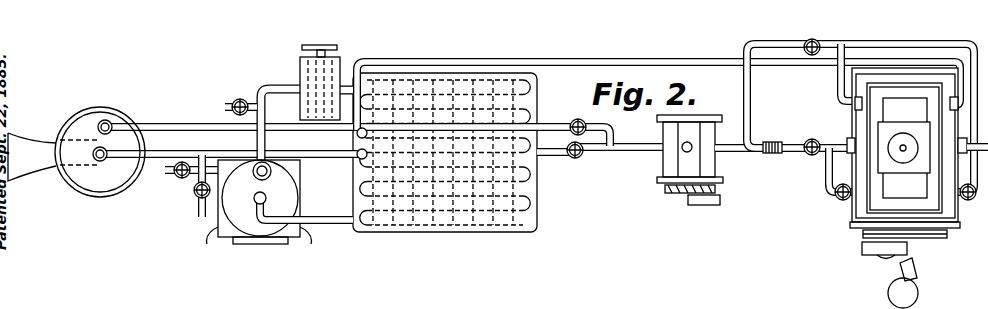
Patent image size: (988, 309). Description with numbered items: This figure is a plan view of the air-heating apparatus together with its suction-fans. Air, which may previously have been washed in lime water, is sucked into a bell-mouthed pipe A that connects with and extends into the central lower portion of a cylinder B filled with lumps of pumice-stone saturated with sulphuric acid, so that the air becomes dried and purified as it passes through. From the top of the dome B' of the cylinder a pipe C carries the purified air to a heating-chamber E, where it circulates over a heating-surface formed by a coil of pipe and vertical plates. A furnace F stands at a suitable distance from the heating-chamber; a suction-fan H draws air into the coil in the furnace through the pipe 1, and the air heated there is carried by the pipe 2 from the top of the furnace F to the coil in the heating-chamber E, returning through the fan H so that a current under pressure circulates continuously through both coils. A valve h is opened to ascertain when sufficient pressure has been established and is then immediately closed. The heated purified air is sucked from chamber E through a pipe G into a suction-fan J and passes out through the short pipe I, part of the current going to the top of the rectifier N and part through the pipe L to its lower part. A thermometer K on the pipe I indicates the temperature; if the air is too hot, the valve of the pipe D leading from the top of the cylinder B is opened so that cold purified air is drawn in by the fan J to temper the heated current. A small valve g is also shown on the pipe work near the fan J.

The pipe A is at (48, 141).
The cylinder B is at (100, 160).
The dome B' is at (104, 166).
The pipe C is at (233, 143).
The pipe D is at (207, 126).
The heating-chamber E is at (452, 229).
The furnace F is at (283, 186).
The pipe G is at (585, 153).
The valve g is at (580, 120).
The suction-fan H is at (297, 82).
The short pipe I is at (735, 151).
The suction-fan J is at (690, 118).
The thermometer K is at (781, 144).
The pipe L is at (804, 151).
The rectifier N is at (904, 136).
The valve h is at (195, 186).
The pipe 1 is at (191, 166).
The pipe 2 is at (313, 217).